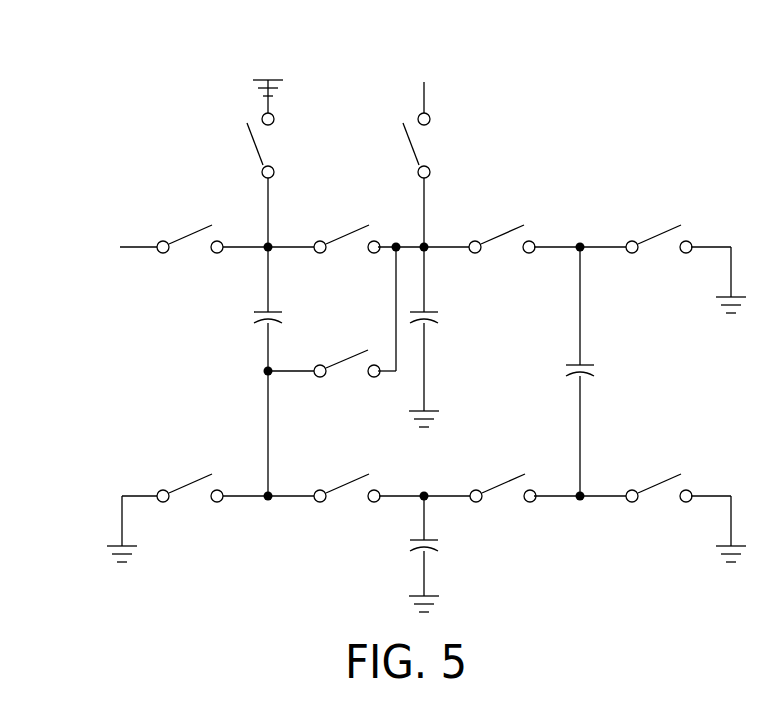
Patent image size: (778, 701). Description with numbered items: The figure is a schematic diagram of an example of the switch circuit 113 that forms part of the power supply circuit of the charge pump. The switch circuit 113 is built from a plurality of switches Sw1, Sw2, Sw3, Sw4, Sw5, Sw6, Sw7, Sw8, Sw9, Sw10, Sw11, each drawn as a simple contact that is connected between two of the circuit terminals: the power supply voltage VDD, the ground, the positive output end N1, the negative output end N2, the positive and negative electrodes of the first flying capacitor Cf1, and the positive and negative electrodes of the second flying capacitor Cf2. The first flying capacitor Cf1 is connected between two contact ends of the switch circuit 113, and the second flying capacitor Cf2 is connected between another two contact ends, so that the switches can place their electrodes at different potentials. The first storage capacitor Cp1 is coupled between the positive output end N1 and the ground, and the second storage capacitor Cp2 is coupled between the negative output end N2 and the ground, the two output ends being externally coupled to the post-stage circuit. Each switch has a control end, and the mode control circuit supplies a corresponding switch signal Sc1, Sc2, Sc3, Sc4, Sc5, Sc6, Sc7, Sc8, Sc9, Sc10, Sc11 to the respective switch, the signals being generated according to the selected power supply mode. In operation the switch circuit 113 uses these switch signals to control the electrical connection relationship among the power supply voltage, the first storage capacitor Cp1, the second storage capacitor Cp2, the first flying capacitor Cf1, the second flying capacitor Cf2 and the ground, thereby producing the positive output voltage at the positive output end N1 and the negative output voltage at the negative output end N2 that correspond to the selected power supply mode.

The switch circuit 113 is at (39, 90).
The switch Sw1 is at (190, 228).
The switch Sw2 is at (347, 228).
The switch Sw3 is at (502, 228).
The switch Sw4 is at (347, 351).
The switch Sw5 is at (659, 228).
The switch Sw6 is at (347, 476).
The switch Sw7 is at (503, 476).
The switch Sw8 is at (659, 476).
The switch Sw9 is at (248, 145).
The switch Sw10 is at (413, 145).
The switch Sw11 is at (190, 476).
The switch signal Sc1 is at (190, 220).
The switch signal Sc2 is at (346, 220).
The switch signal Sc3 is at (503, 220).
The switch signal Sc4 is at (344, 342).
The switch signal Sc5 is at (659, 220).
The switch signal Sc6 is at (345, 469).
The switch signal Sc7 is at (503, 469).
The switch signal Sc8 is at (659, 469).
The switch signal Sc9 is at (241, 146).
The switch signal Sc10 is at (398, 147).
The switch signal Sc11 is at (190, 469).
The first flying capacitor Cf1 is at (247, 315).
The second flying capacitor Cf2 is at (600, 372).
The first storage capacitor Cp1 is at (447, 315).
The second storage capacitor Cp2 is at (446, 547).
The positive output end N1 is at (441, 238).
The negative output end N2 is at (426, 484).